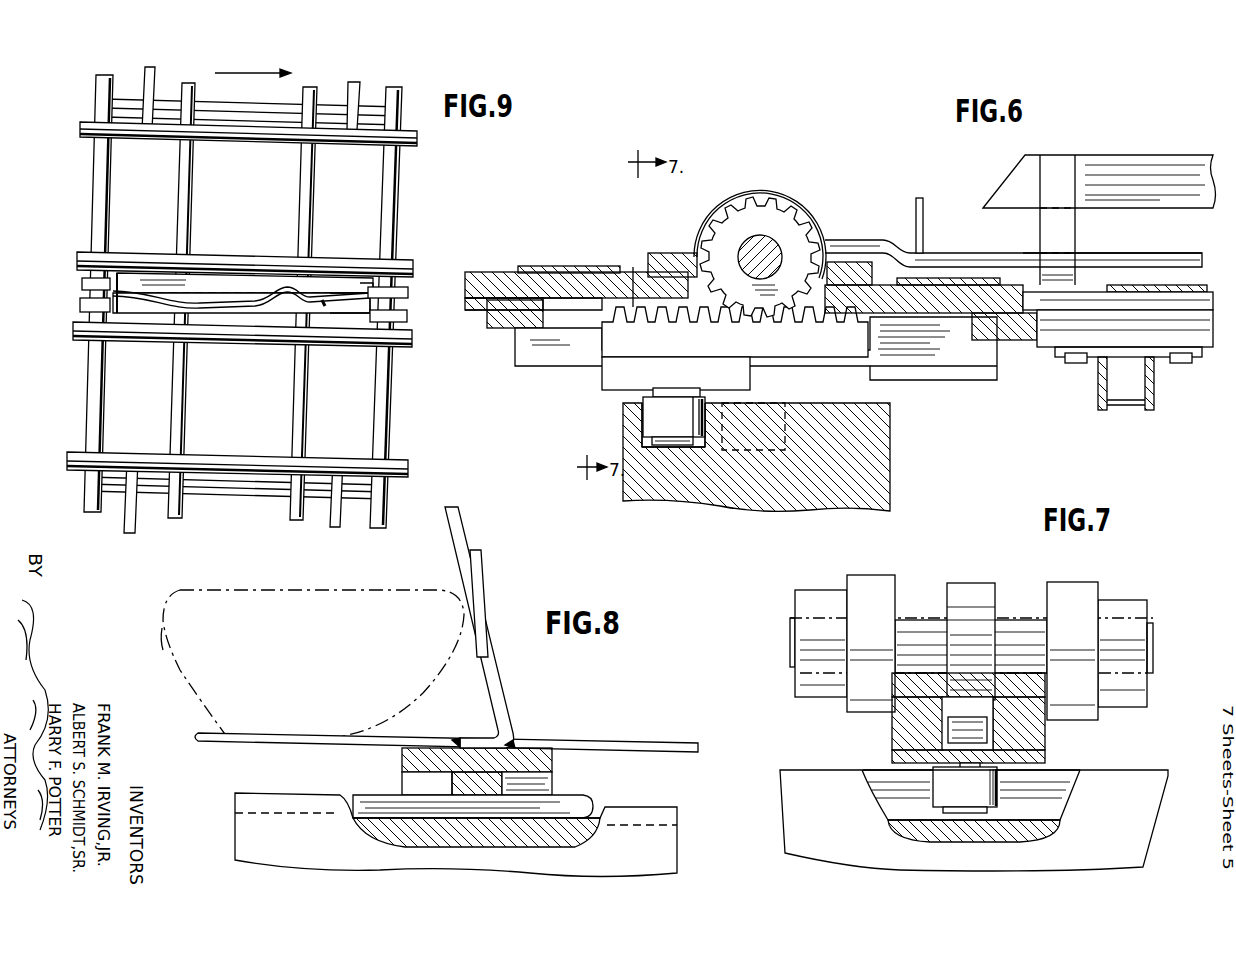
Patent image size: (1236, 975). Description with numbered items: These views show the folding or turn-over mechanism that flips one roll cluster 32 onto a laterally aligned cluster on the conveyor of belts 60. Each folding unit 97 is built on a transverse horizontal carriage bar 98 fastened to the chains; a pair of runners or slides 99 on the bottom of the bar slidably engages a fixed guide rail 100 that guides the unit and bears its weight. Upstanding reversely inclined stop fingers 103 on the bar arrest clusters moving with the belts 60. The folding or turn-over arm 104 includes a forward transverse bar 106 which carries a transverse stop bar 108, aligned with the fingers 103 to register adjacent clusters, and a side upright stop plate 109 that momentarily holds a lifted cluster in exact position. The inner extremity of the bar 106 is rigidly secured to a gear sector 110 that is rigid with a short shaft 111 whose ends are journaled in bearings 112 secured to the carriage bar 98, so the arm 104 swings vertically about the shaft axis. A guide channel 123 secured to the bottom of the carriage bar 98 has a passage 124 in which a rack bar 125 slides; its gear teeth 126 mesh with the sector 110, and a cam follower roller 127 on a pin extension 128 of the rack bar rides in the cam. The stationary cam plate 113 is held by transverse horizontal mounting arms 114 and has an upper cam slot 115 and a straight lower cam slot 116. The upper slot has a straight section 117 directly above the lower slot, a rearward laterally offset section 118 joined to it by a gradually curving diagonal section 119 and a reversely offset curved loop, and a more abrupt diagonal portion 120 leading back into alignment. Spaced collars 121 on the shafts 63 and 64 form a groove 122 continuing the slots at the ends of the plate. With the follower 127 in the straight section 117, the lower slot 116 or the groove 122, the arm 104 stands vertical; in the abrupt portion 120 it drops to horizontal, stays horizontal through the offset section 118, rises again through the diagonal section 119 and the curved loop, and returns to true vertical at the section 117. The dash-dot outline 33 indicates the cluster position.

In FIG. 8, the roll cluster 32 is at (156, 663).
In FIG. 8, the wheel outline 33 is at (336, 590).
In FIG. 6, the belt 60 is at (568, 267).
In FIG. 8, the belt 60 is at (208, 742).
In FIG. 9, the transverse horizontal shaft 63 is at (92, 388).
In FIG. 9, the transverse horizontal shaft 64 is at (402, 206).
In FIG. 6, the roll cluster folding or turn-over unit 97 is at (1162, 135).
In FIG. 8, the roll cluster folding or turn-over unit 97 is at (512, 706).
In FIG. 6, the carriage bar 98 is at (633, 266).
In FIG. 8, the carriage bar 98 is at (525, 765).
In FIG. 8, the runner or slide 99 is at (573, 808).
In FIG. 8, the guide rail 100 is at (653, 843).
In FIG. 8, the stop finger 103 is at (487, 578).
In FIG. 6, the folding or turn-over arm 104 is at (1102, 254).
In FIG. 6, the forward transverse bar 106 is at (982, 247).
In FIG. 6, the transverse stop bar 108 is at (1112, 170).
In FIG. 6, the side upright stop plate 109 is at (926, 210).
In FIG. 6, the gear sector 110 is at (738, 228).
In FIG. 7, the gear sector 110 is at (973, 590).
In FIG. 6, the short shaft 111 is at (768, 247).
In FIG. 7, the short shaft 111 is at (1016, 630).
In FIG. 6, the bearing 112 is at (808, 208).
In FIG. 7, the bearing 112 is at (873, 590).
In FIG. 9, the cam plate 113 is at (331, 285).
In FIG. 6, the cam plate 113 is at (892, 468).
In FIG. 7, the cam plate 113 is at (1127, 790).
In FIG. 9, the mounting arm 114 is at (306, 191).
In FIG. 9, the upper cam slot 115 is at (323, 306).
In FIG. 6, the upper cam slot 115 is at (662, 448).
In FIG. 7, the upper cam slot 115 is at (1046, 788).
In FIG. 9, the lower cam slot 116 is at (199, 288).
In FIG. 9, the straight section 117 is at (337, 292).
In FIG. 6, the straight section 117 is at (758, 447).
In FIG. 9, the laterally offset longitudinal section 118 is at (177, 304).
In FIG. 6, the laterally offset longitudinal section 118 is at (683, 448).
In FIG. 9, the diagonal slot section 119 is at (254, 298).
In FIG. 9, the abrupt diagonal cam slot portion 120 is at (128, 292).
In FIG. 9, the collar 121 is at (86, 286).
In FIG. 9, the groove 122 is at (82, 296).
In FIG. 6, the guide channel 123 is at (943, 348).
In FIG. 7, the guide channel 123 is at (900, 729).
In FIG. 7, the passage 124 is at (893, 755).
In FIG. 6, the rack bar 125 is at (840, 348).
In FIG. 7, the rack bar 125 is at (1038, 730).
In FIG. 6, the gear teeth 126 is at (690, 321).
In FIG. 7, the gear teeth 126 is at (957, 706).
In FIG. 6, the cam follower roller 127 is at (660, 415).
In FIG. 7, the cam follower roller 127 is at (980, 796).
In FIG. 6, the pin extension 128 is at (673, 379).
In FIG. 7, the pin extension 128 is at (976, 764).